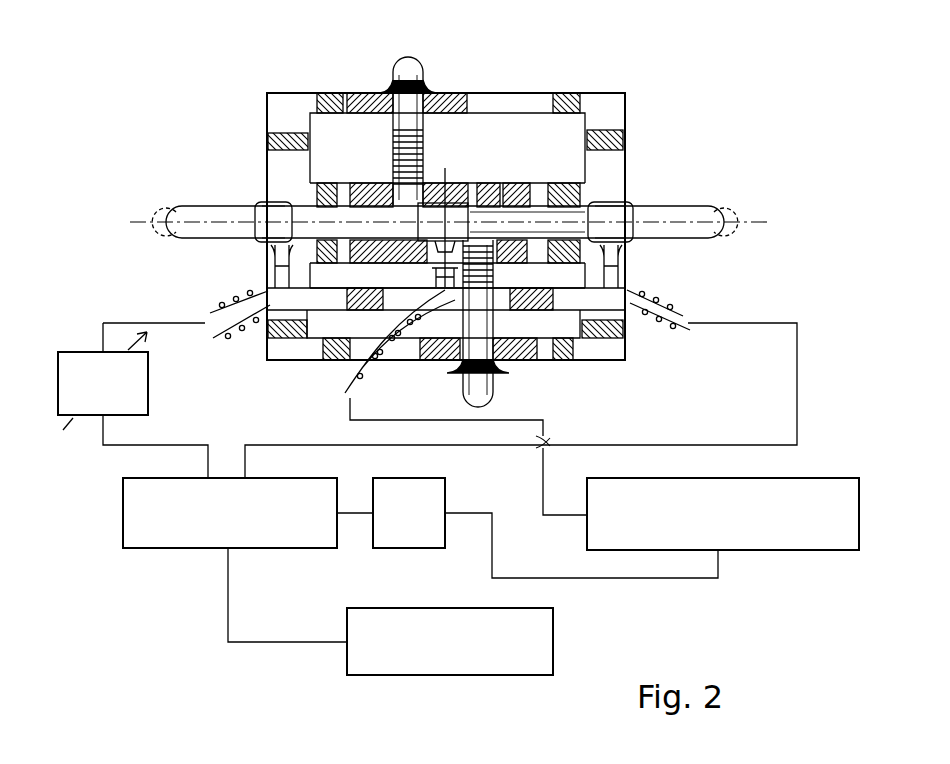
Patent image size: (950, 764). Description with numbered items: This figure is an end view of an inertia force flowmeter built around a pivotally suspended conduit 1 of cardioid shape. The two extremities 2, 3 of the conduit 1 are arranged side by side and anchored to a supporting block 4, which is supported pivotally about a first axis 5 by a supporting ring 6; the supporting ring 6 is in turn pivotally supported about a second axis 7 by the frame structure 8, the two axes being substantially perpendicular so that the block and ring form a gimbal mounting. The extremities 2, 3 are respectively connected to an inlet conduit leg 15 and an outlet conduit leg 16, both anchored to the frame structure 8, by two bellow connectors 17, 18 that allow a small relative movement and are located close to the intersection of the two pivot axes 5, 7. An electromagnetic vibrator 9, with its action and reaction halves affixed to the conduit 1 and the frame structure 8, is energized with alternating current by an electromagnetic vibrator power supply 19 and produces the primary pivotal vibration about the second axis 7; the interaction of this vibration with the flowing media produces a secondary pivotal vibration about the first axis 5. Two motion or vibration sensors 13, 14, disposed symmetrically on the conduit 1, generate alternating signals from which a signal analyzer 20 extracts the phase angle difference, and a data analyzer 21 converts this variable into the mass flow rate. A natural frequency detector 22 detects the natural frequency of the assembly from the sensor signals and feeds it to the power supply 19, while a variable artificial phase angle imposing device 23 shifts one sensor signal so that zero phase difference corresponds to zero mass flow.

The conduit 1 is at (400, 225).
The extremity 2 is at (377, 217).
The extremity 3 is at (505, 215).
The supporting block 4 is at (467, 205).
The first axis 5 is at (445, 200).
The supporting ring 6 is at (527, 183).
The second axis 7 is at (752, 222).
The frame structure 8 is at (627, 145).
The electromagnetic vibrator 9 is at (332, 360).
The motion or vibration sensor 13 is at (270, 260).
The motion or vibration sensor 14 is at (620, 260).
The inlet conduit leg 15 is at (409, 72).
The outlet conduit leg 16 is at (493, 382).
The bellow connector 17 is at (385, 150).
The bellow connector 18 is at (500, 273).
The electromagnetic vibrator power supply 19 is at (770, 552).
The signal analyzer 20 is at (123, 507).
The data analyzer 21 is at (553, 633).
The natural frequency detector 22 is at (407, 550).
The variable artificial phase angle imposing device 23 is at (58, 385).